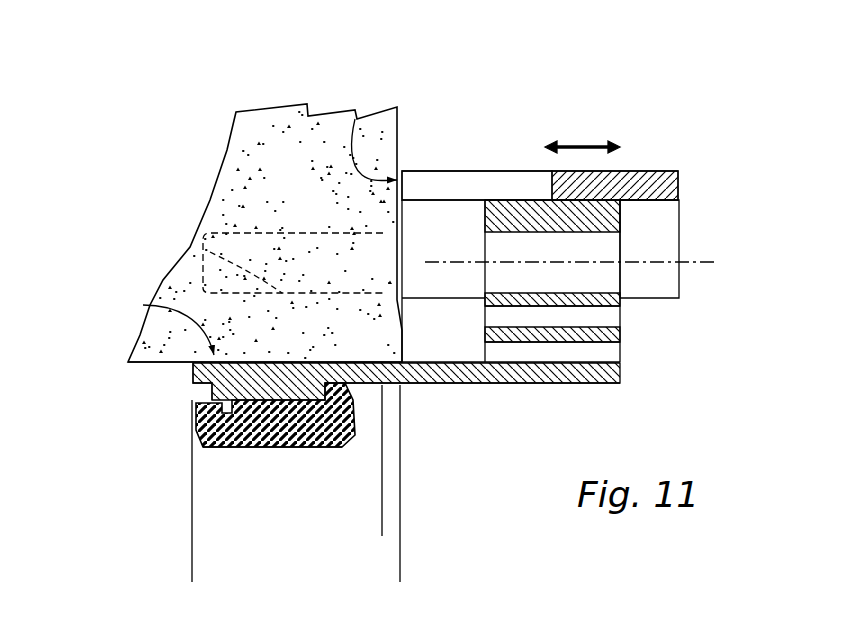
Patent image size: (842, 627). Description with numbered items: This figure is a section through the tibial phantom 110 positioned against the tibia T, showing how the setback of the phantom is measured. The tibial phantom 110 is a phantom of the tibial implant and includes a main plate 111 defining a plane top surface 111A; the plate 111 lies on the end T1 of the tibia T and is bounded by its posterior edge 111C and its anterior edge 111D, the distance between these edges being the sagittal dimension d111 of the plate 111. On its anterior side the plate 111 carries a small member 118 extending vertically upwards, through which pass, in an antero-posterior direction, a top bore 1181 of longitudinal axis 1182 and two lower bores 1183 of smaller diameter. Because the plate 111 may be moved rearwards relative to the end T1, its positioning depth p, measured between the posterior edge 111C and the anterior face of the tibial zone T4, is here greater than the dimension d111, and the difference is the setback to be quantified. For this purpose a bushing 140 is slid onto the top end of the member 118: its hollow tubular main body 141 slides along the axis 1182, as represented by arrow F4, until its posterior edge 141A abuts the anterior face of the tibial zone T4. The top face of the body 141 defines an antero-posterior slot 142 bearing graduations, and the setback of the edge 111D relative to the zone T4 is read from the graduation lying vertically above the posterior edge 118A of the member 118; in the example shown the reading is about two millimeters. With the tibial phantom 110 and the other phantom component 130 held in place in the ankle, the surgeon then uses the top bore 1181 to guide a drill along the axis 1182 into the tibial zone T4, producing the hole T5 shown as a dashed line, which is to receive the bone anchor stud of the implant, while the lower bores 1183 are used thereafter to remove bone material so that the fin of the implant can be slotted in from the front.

The tibia T is at (182, 198).
The posterior edge of the tubular main body 141A is at (357, 118).
The plane top surface 111A is at (143, 305).
The hole T5 is at (198, 245).
The end of the tibia T1 is at (163, 364).
The tibial phantom 110 is at (613, 388).
The anterior edge of the plate 111D is at (427, 390).
The posterior edge of the plate 111C is at (186, 382).
The main plate 111 is at (192, 421).
The phantom component 130 is at (187, 453).
The bushing 140 is at (685, 167).
The antero-posterior slot 142 is at (510, 185).
The hollow tubular main body 141 is at (663, 172).
The posterior edge of the member 118A is at (480, 218).
The small member 118 is at (620, 213).
The top bore 1181 is at (620, 247).
The longitudinal axis of the top bore 1182 is at (680, 262).
The lower bores 1183 is at (613, 347).
The tibial zone T4 is at (402, 278).
The arrow F4 is at (582, 132).
The sagittal dimension of the plate d111 is at (372, 530).
The positioning depth p is at (390, 572).